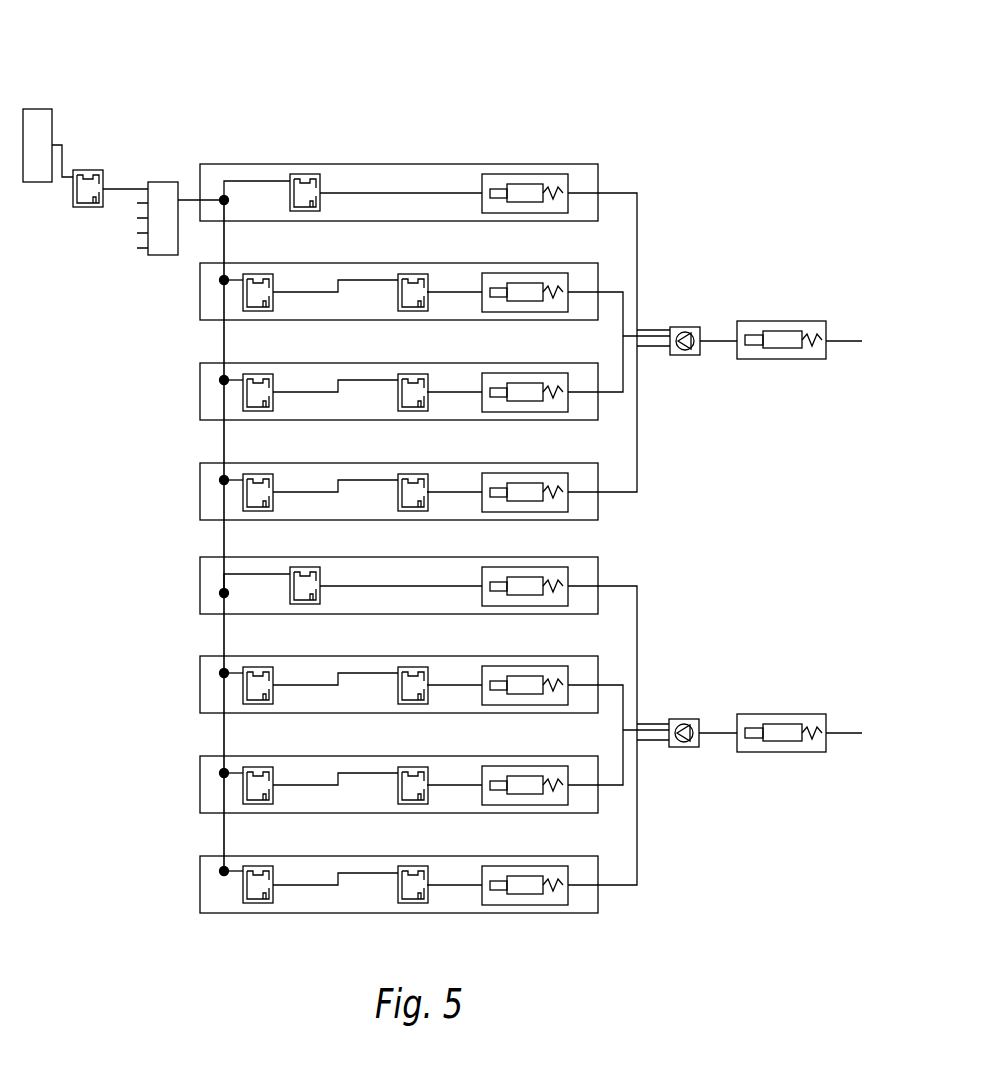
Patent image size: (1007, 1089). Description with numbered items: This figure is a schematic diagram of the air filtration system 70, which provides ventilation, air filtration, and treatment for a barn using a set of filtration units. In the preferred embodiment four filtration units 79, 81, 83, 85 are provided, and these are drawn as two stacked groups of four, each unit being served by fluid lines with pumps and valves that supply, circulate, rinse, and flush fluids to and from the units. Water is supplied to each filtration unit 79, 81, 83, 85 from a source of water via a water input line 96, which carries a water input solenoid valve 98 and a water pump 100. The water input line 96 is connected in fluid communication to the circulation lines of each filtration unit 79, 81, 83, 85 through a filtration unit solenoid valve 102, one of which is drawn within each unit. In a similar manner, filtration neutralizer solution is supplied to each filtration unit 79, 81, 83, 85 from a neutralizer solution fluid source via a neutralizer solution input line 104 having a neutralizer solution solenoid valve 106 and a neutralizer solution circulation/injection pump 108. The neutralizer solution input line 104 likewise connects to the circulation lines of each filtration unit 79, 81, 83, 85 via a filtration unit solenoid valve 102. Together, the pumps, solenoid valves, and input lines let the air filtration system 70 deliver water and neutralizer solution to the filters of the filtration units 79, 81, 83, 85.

The air filtration system 70 is at (539, 52).
The filtration unit 79 is at (171, 143).
The filtration unit 81 is at (171, 242).
The filtration unit 83 is at (171, 342).
The filtration unit 85 is at (171, 442).
The filtration unit solenoid valve 102 is at (539, 174).
The water pump 100 is at (689, 327).
The water input solenoid valve 98 is at (777, 321).
The water input line 96 is at (843, 341).
The neutralizer solution circulation/injection pump 108 is at (688, 719).
The neutralizer solution solenoid valve 106 is at (777, 714).
The neutralizer solution input line 104 is at (842, 733).